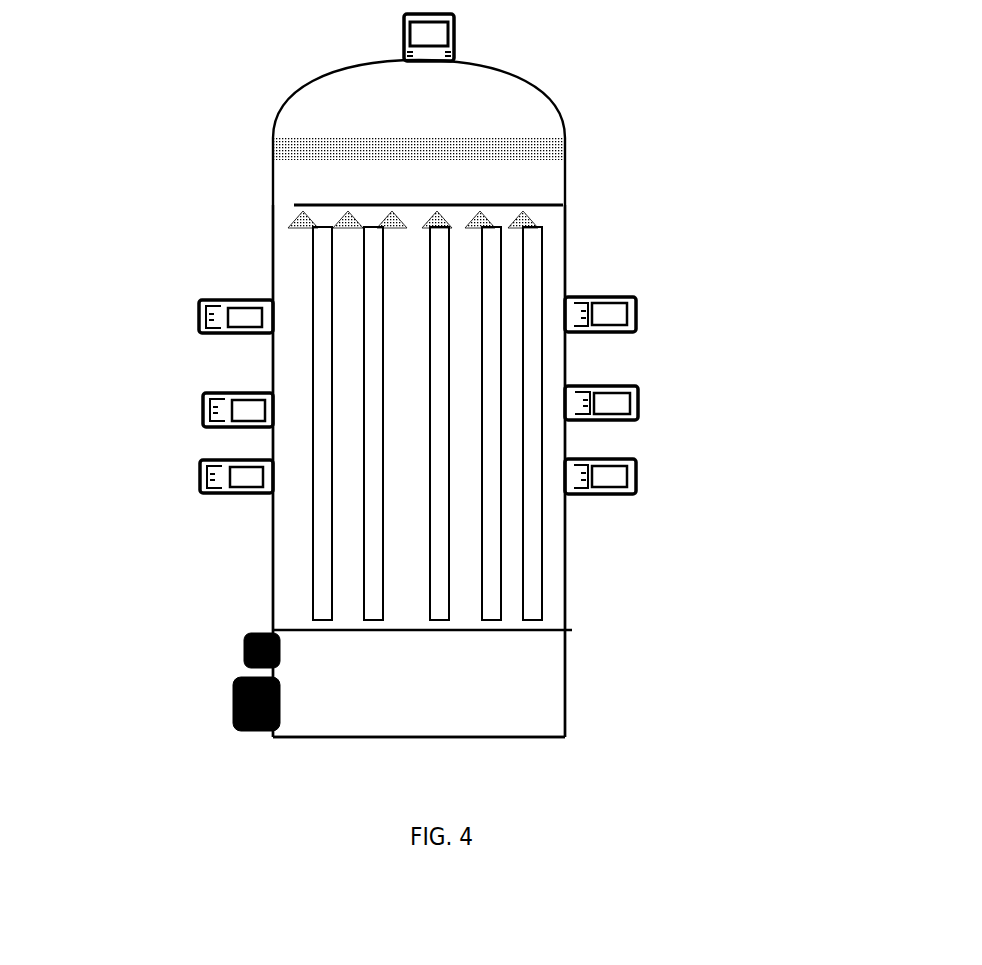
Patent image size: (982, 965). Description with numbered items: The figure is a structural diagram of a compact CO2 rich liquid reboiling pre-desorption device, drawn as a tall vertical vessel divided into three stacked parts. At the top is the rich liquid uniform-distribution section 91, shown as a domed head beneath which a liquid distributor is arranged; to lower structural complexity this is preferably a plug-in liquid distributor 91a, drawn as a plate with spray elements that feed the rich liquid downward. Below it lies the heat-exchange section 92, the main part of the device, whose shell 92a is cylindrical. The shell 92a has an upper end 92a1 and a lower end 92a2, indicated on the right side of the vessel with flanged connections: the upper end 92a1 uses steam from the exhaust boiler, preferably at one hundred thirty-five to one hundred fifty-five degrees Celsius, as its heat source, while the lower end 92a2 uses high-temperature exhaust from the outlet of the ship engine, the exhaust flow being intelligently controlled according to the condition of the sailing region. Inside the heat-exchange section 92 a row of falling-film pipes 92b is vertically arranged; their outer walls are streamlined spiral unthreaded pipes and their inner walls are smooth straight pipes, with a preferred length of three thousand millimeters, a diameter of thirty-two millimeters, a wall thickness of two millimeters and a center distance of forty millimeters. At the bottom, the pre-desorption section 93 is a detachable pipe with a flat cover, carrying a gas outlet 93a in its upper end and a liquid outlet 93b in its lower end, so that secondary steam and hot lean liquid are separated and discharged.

The rich liquid uniform-distribution section 91 is at (273, 210).
The plug-in liquid distributor 91a is at (512, 200).
The heat-exchange section 92 is at (273, 377).
The shell 92a is at (568, 247).
The upper end 92a1 is at (568, 362).
The lower end 92a2 is at (568, 447).
The falling-film pipe 92b is at (545, 573).
The pre-desorption section 93 is at (275, 674).
The gas outlet 93a is at (245, 652).
The liquid outlet 93b is at (233, 703).